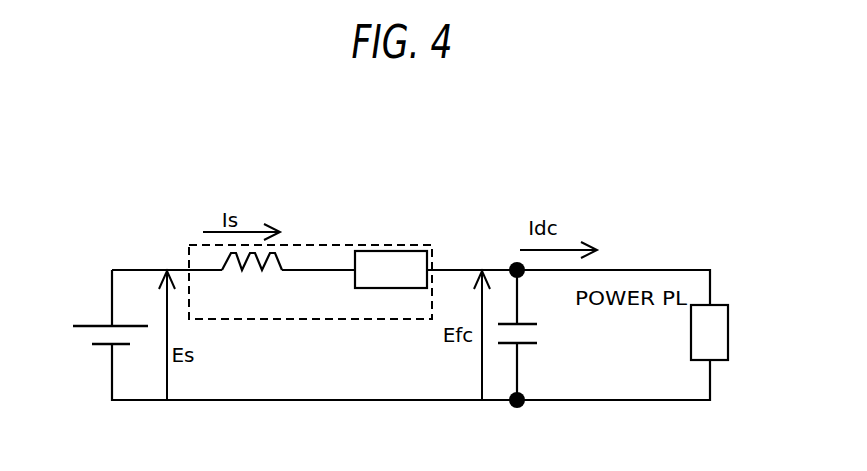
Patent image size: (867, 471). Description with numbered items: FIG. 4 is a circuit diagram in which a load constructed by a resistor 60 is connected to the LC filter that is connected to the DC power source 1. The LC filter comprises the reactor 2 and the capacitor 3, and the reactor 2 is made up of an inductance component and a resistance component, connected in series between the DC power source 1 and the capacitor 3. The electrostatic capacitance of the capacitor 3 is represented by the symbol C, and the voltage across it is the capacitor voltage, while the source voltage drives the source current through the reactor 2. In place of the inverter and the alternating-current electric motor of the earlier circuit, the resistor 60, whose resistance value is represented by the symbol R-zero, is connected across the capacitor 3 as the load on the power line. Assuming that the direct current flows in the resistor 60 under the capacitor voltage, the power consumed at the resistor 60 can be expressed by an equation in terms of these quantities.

The DC power source 1 is at (98, 326).
The reactor 2 is at (343, 244).
The capacitor 3 is at (533, 344).
The resistor 60 is at (723, 304).